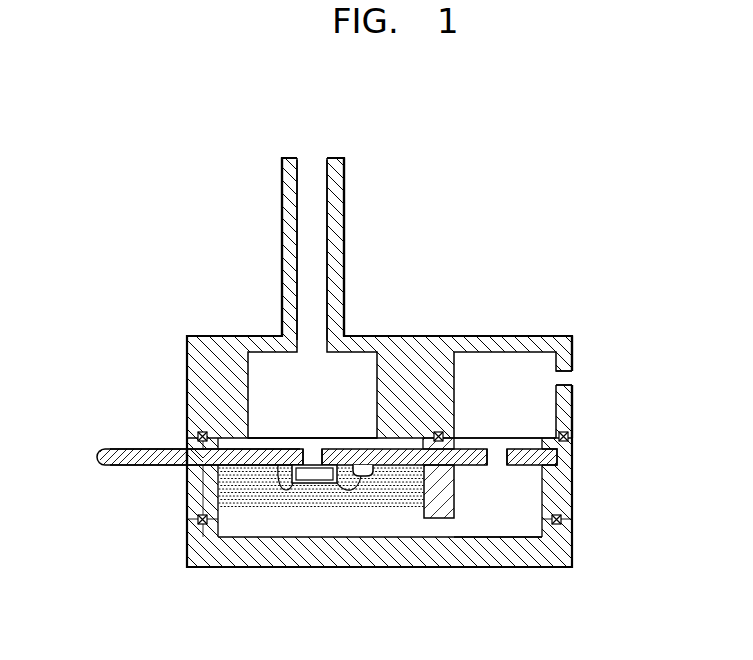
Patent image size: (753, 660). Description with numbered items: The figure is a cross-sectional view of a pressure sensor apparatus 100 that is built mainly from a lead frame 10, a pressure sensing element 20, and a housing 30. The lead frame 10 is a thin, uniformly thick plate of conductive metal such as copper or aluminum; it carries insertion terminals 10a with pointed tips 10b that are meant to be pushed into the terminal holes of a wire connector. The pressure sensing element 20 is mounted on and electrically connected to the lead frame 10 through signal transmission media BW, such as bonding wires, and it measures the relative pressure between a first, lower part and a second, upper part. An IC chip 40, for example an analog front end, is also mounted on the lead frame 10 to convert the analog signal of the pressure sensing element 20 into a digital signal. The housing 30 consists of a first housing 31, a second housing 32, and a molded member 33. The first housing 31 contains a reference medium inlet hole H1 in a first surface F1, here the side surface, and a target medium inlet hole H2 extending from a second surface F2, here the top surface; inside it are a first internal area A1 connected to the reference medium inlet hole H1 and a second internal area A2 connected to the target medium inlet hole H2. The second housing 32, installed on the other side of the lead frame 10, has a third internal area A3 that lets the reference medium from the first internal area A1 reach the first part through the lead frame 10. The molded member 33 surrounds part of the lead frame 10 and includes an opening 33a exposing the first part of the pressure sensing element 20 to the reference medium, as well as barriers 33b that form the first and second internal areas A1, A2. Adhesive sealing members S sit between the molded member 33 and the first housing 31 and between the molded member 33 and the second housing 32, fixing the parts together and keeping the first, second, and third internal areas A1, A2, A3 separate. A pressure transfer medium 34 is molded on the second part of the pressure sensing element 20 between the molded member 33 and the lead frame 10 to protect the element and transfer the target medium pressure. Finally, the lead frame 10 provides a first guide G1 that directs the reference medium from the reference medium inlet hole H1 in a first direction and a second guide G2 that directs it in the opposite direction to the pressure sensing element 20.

The pressure sensor apparatus 100 is at (563, 192).
The lead frame 10 is at (128, 466).
The insertion terminals 10a is at (118, 448).
The pointed tips 10b is at (100, 454).
The pressure sensing element 20 is at (292, 484).
The housing 30 is at (648, 360).
The first housing 31 is at (572, 360).
The second housing 32 is at (562, 547).
The molded member 33 is at (562, 483).
The opening 33a is at (538, 452).
The barriers 33b is at (441, 507).
The pressure transfer medium 34 is at (232, 588).
The IC chip 40 is at (362, 478).
The adhesive sealing member S is at (198, 435).
The signal transmission media BW is at (285, 482).
The first guide G1 is at (497, 458).
The second guide G2 is at (313, 456).
The reference medium inlet hole H1 is at (556, 378).
The target medium inlet hole H2 is at (313, 189).
The first surface F1 is at (572, 410).
The second surface F2 is at (394, 336).
The first internal area A1 is at (491, 423).
The second internal area A2 is at (300, 423).
The third internal area A3 is at (465, 530).